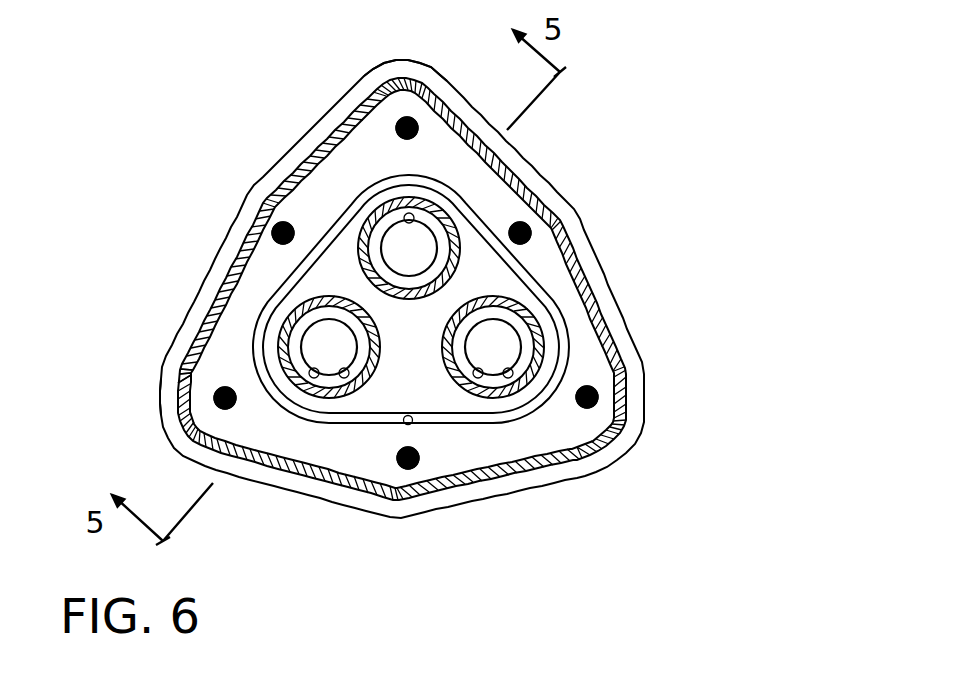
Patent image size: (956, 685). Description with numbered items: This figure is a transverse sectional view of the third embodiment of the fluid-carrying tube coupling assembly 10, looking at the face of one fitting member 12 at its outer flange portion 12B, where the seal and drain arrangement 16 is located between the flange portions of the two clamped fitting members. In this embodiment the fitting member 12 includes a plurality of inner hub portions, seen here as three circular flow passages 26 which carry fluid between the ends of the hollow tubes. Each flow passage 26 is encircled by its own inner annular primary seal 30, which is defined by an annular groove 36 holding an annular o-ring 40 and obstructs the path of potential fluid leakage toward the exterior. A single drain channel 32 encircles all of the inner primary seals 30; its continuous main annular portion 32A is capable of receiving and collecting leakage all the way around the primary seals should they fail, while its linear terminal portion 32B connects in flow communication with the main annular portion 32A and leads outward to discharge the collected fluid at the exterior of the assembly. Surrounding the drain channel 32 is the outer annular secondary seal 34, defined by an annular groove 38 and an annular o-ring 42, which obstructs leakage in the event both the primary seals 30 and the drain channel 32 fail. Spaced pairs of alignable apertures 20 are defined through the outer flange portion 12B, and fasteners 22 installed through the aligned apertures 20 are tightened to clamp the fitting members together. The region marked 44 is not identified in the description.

The tube coupling assembly 10 is at (588, 103).
The fitting member 12 is at (645, 291).
The outer flange portion 12B is at (595, 327).
The seal and drain arrangement 16 is at (612, 252).
The apertures 20 is at (410, 118).
The fasteners 22 is at (402, 118).
The flow passages 26 is at (425, 215).
The inner annular primary seal 30 is at (318, 246).
The drain channel 32 is at (447, 177).
The main annular portion 32A is at (506, 185).
The linear terminal portion 32B is at (406, 412).
The outer annular secondary seal 34 is at (362, 74).
The annular groove 36 is at (362, 248).
The annular groove 38 is at (178, 378).
The annular o-ring 40 is at (388, 224).
The annular o-ring 42 is at (173, 403).
The drain region 44 is at (579, 369).